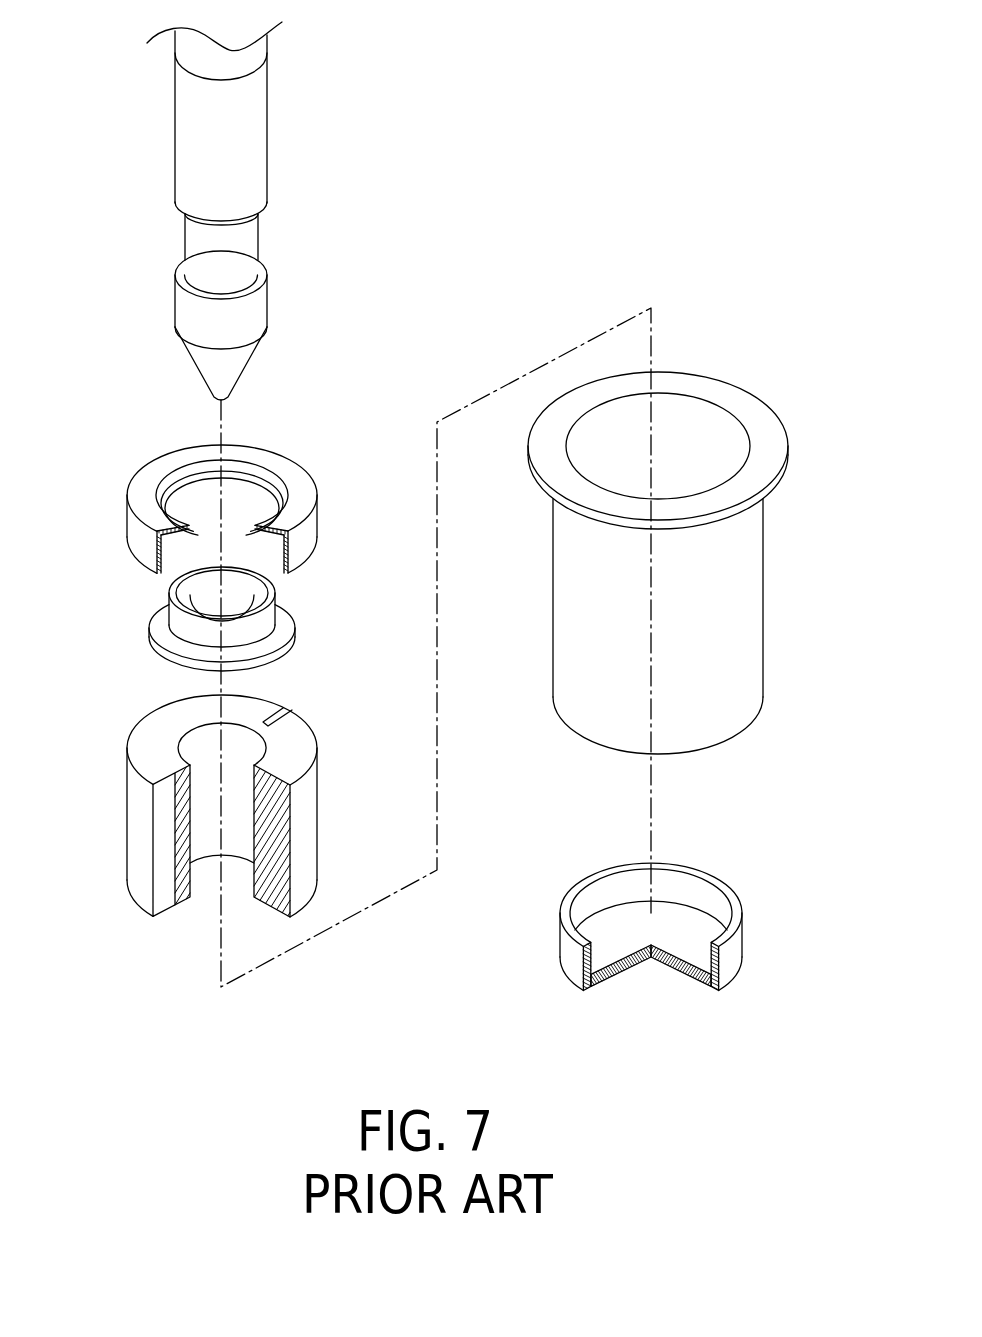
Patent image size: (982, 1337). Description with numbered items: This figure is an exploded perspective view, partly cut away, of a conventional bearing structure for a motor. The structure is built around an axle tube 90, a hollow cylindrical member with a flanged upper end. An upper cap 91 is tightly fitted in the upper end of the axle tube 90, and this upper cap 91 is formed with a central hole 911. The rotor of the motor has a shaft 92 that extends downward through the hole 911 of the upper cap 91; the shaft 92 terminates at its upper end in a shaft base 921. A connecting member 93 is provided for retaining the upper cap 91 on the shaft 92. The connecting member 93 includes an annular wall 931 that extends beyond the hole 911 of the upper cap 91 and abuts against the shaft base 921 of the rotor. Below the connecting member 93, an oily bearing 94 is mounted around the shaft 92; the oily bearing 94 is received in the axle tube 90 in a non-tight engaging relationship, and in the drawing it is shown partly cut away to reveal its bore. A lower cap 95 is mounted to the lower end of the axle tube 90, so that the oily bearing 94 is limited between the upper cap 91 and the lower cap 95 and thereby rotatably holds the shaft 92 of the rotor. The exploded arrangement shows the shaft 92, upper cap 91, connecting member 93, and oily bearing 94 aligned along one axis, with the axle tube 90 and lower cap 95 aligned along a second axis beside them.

The axle tube 90 is at (750, 587).
The upper cap 91 is at (293, 477).
The hole 911 is at (205, 493).
The shaft 92 is at (233, 165).
The shaft base 921 is at (260, 50).
The connecting member 93 is at (278, 637).
The annular wall 931 is at (188, 632).
The oily bearing 94 is at (312, 838).
The lower cap 95 is at (733, 945).